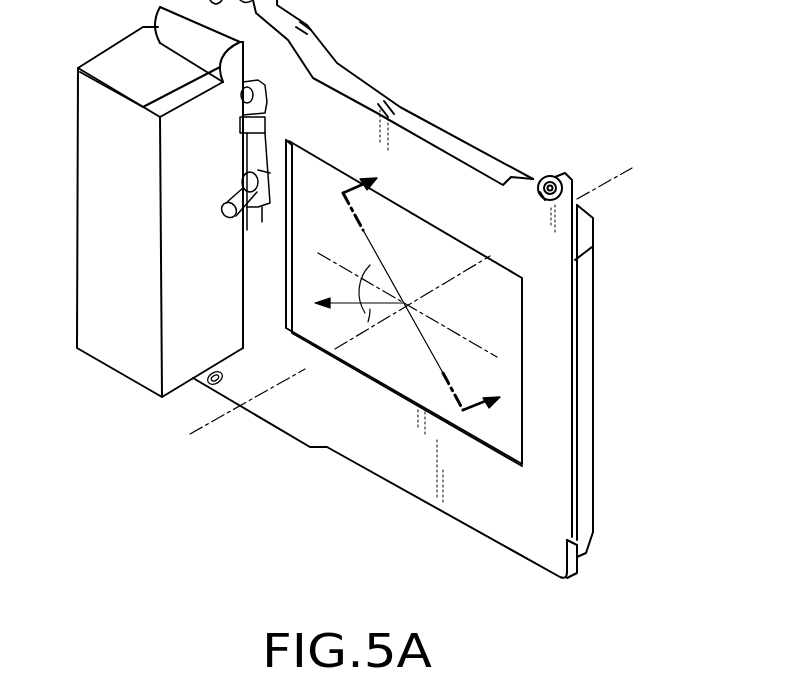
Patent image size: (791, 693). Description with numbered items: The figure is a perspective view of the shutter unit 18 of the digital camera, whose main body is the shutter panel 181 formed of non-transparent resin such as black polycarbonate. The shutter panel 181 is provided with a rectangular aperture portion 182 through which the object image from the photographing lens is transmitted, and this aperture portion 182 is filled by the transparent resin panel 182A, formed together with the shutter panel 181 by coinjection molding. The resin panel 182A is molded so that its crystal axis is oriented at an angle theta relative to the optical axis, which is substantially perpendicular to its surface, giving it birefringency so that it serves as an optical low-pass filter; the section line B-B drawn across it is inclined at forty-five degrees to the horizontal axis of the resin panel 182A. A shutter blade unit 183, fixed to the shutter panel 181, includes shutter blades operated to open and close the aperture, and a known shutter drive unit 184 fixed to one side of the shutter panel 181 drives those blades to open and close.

The shutter unit 18 is at (440, 135).
The shutter panel 181 is at (500, 518).
The aperture portion 182 is at (418, 382).
The transparent resin panel 182A is at (497, 372).
The shutter blade unit 183 is at (583, 295).
The shutter drive unit 184 is at (132, 333).